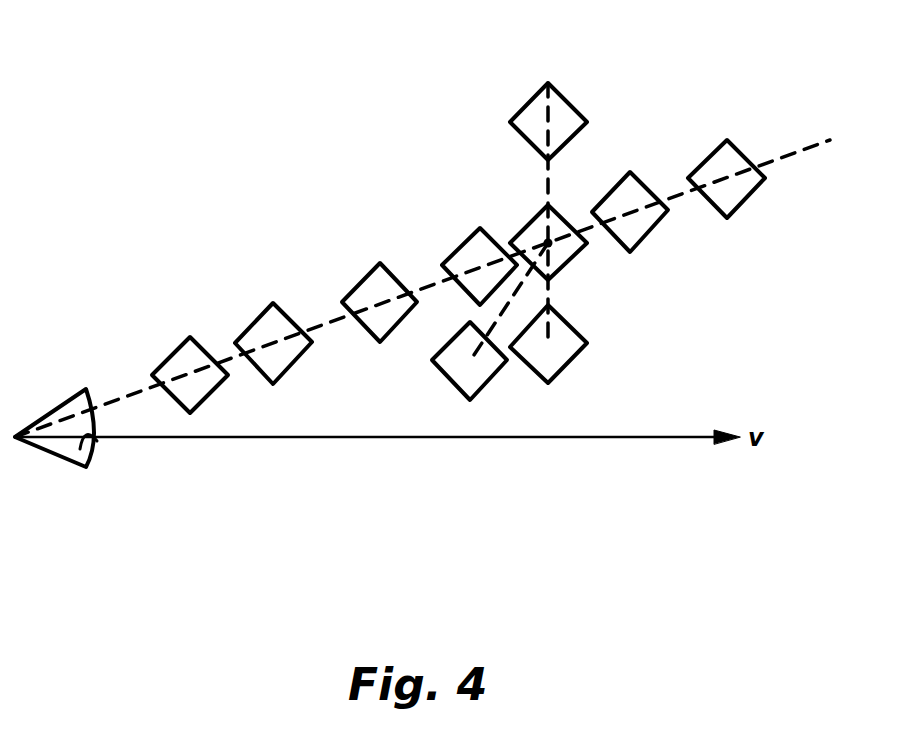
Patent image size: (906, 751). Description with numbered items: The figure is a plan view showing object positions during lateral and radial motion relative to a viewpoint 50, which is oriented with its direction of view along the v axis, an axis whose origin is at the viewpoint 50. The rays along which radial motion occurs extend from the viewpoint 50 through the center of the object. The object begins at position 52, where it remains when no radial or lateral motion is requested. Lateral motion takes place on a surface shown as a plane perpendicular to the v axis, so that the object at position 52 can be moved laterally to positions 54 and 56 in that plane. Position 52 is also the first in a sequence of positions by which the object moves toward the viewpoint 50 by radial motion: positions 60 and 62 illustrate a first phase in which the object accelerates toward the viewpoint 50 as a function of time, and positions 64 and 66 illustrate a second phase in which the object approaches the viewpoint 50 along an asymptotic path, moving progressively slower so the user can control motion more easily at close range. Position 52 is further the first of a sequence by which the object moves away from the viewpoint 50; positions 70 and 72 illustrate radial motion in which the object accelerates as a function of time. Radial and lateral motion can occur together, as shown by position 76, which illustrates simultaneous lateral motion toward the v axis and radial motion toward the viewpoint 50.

The viewpoint 50 is at (68, 397).
The position 52 is at (563, 215).
The position 54 is at (570, 358).
The position 56 is at (568, 102).
The position 60 is at (458, 248).
The position 62 is at (358, 284).
The position 64 is at (252, 320).
The position 66 is at (172, 344).
The position 70 is at (650, 230).
The position 72 is at (746, 190).
The position 76 is at (442, 386).